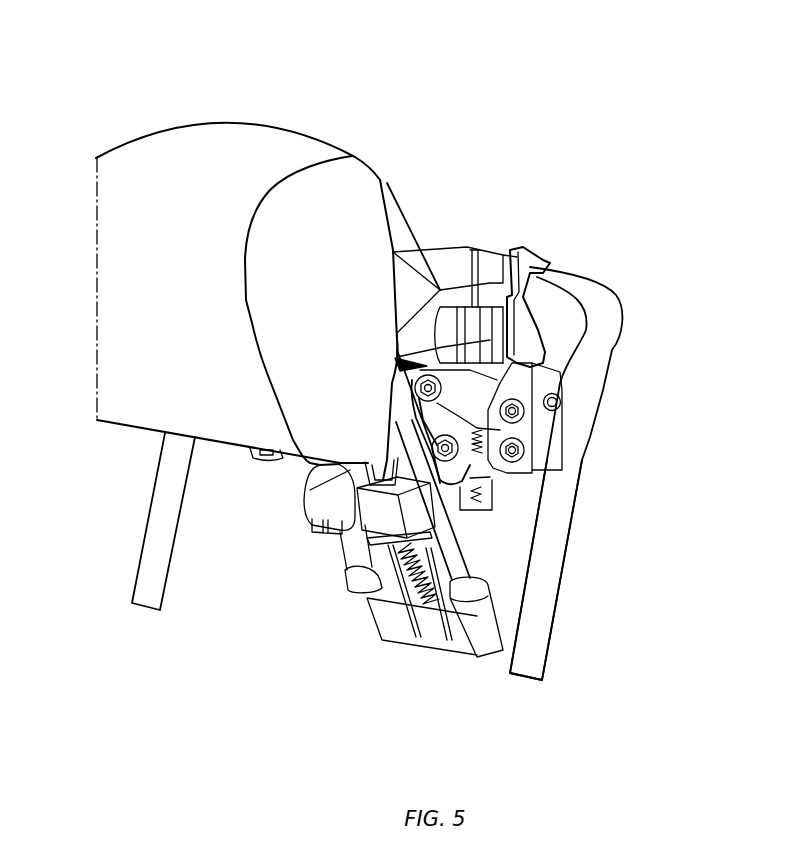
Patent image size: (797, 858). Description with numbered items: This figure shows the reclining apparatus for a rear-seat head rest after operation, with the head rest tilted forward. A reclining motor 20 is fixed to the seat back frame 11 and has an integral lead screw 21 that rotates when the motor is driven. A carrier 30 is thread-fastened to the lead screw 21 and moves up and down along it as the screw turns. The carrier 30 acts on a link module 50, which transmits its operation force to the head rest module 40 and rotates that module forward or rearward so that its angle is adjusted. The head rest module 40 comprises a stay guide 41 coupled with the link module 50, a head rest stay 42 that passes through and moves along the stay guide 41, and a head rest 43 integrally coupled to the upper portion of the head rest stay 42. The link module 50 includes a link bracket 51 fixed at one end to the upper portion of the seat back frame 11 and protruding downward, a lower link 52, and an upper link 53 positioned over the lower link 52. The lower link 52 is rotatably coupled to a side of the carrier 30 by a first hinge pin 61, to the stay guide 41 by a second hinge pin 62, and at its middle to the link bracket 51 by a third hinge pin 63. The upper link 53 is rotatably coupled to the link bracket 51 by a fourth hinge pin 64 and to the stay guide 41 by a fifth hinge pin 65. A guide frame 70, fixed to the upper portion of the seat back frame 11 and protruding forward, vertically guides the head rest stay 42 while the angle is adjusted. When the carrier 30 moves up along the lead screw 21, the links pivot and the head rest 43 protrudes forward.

The seat back frame 11 is at (537, 617).
The reclining motor 20 is at (430, 333).
The lead screw 21 is at (393, 387).
The carrier 30 is at (543, 410).
The head rest module 40 is at (253, 125).
The stay guide 41 is at (395, 462).
The head rest stay 42 is at (340, 530).
The head rest 43 is at (205, 157).
The link module 50 is at (556, 328).
The link bracket 51 is at (527, 300).
The lower link 52 is at (478, 508).
The upper link 53 is at (478, 413).
The first hinge pin 61 is at (560, 402).
The second hinge pin 62 is at (455, 452).
The third hinge pin 63 is at (518, 468).
The fourth hinge pin 64 is at (537, 460).
The fifth hinge pin 65 is at (412, 375).
The guide frame 70 is at (476, 252).